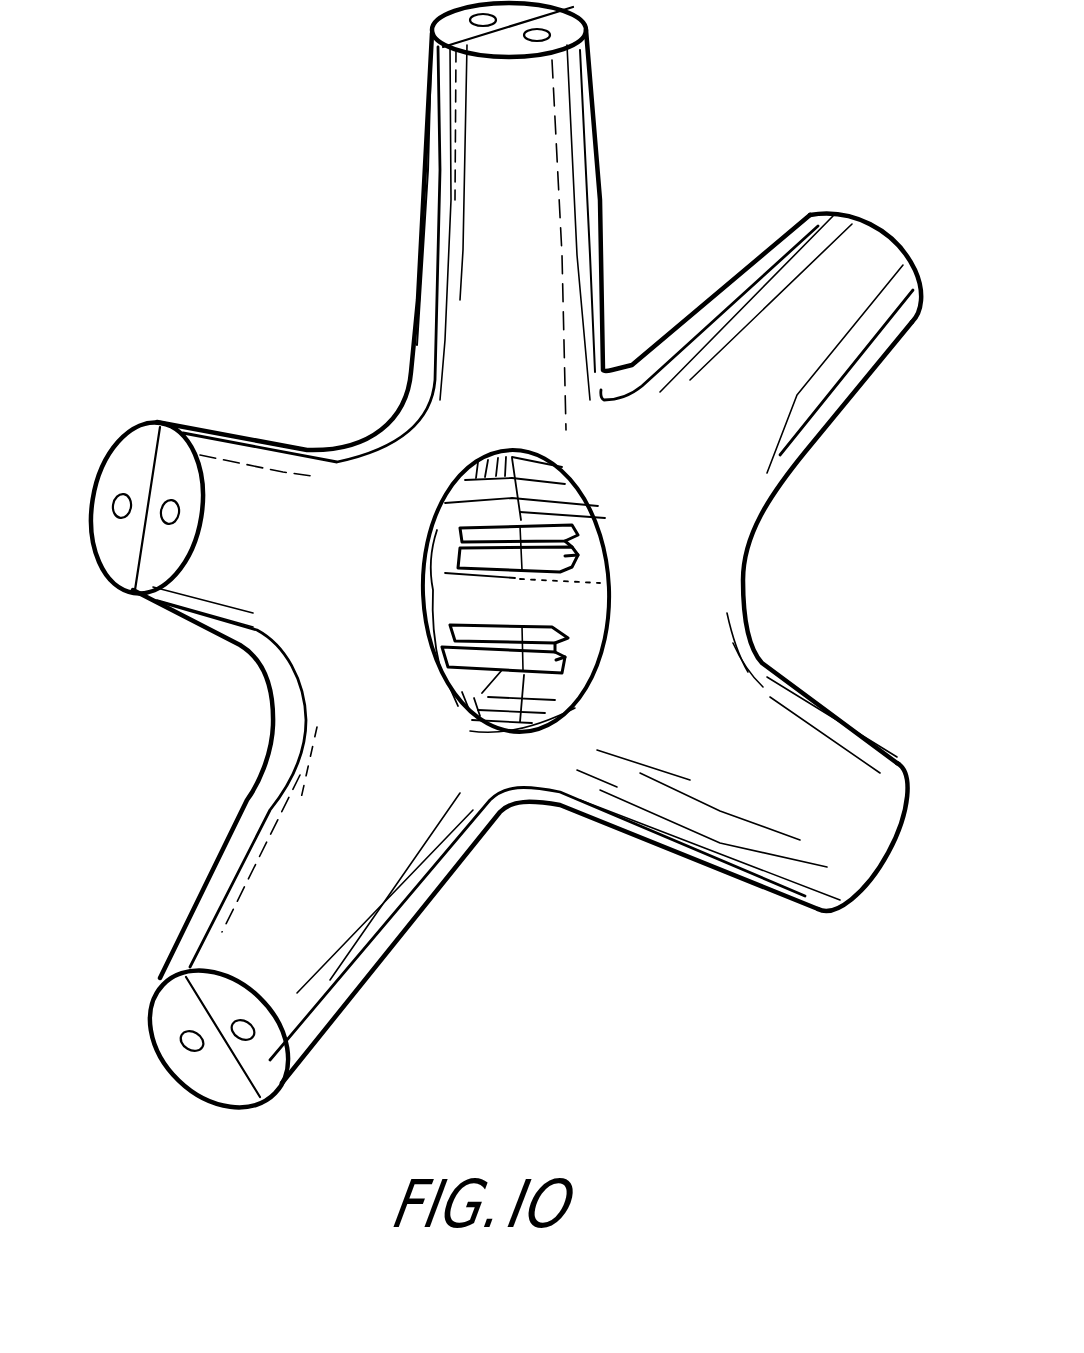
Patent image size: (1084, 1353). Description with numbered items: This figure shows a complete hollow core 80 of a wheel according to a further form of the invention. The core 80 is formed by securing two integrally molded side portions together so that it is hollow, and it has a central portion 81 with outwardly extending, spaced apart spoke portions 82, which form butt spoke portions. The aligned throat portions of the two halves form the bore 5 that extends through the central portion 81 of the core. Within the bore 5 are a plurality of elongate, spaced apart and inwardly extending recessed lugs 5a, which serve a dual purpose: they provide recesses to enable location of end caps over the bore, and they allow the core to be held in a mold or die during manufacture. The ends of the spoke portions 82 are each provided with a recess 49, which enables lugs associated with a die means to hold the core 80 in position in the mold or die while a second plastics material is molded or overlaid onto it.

The hollow core 80 is at (507, 588).
The spoke portions 82 is at (544, 190).
The recess 49 is at (306, 593).
The bore 5 is at (645, 591).
The recessed lugs 5a is at (578, 540).
The central portion 81 is at (537, 740).